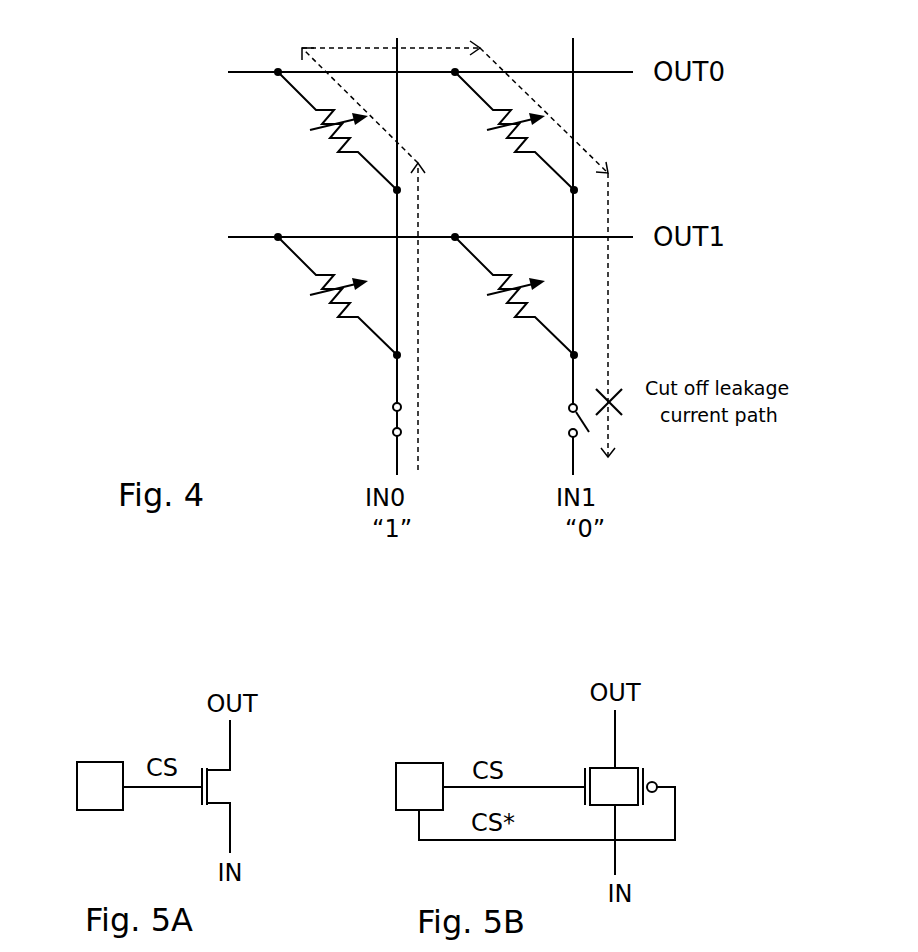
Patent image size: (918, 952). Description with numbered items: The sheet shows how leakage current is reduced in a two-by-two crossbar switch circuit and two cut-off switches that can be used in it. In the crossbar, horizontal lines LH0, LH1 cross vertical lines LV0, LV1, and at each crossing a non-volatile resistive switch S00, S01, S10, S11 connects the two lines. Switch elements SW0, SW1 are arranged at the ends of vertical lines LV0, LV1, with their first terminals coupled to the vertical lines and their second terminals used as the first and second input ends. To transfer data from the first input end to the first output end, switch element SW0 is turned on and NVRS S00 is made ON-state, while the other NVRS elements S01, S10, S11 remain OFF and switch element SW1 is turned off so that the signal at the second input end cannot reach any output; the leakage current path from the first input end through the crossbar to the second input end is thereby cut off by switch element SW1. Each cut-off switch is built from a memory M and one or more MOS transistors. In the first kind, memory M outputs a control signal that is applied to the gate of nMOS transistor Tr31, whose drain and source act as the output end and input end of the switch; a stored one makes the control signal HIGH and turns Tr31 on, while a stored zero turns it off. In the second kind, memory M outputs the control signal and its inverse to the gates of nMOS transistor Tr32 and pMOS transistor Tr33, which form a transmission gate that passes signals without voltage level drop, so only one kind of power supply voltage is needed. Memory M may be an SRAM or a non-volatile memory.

In FIG. 4, the horizontal line LH0 is at (405, 73).
In FIG. 4, the horizontal line LH1 is at (405, 238).
In FIG. 4, the vertical line LV0 is at (386, 201).
In FIG. 4, the vertical line LV1 is at (564, 202).
In FIG. 4, the NVRS S00 is at (327, 131).
In FIG. 4, the NVRS S01 is at (506, 131).
In FIG. 4, the NVRS S10 is at (327, 296).
In FIG. 4, the NVRS S11 is at (507, 296).
In FIG. 4, the switch element SW0 is at (359, 439).
In FIG. 4, the switch element SW1 is at (540, 439).
In FIG. 5A, the memory M is at (100, 786).
In FIG. 5B, the memory M is at (419, 786).
In FIG. 5A, the nMOS transistor Tr31 is at (245, 786).
In FIG. 5B, the nMOS transistor Tr32 is at (589, 771).
In FIG. 5B, the pMOS transistor Tr33 is at (553, 787).